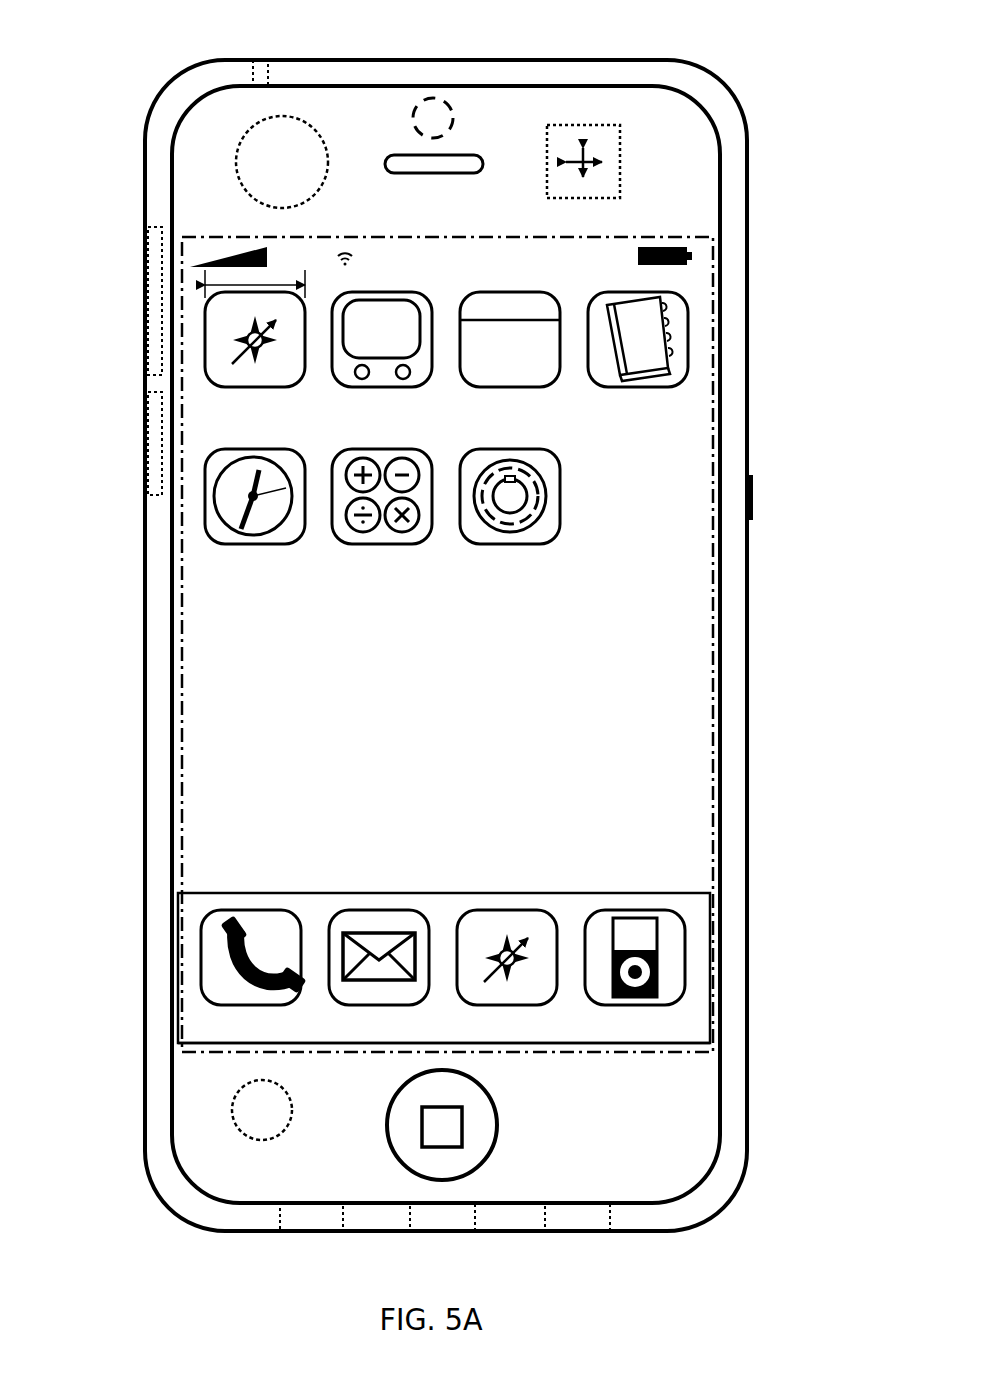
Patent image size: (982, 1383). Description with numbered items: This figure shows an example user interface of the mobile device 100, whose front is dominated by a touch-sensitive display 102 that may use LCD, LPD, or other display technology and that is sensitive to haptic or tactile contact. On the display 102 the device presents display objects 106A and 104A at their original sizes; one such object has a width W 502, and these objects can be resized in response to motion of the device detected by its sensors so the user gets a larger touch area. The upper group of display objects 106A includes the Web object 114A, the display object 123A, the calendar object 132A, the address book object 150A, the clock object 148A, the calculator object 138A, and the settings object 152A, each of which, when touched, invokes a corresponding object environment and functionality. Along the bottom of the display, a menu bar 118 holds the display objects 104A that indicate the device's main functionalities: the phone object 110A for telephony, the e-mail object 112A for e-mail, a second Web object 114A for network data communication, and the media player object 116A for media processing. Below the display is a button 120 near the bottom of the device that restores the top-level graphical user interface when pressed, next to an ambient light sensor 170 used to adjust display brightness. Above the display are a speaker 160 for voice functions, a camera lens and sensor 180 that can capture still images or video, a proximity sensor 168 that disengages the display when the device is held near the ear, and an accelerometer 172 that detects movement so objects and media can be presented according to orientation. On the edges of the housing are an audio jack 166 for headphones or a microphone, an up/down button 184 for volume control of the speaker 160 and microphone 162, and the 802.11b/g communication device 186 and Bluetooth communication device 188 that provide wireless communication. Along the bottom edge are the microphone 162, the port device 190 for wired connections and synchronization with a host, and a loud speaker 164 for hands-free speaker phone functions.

The mobile device 100 is at (532, 59).
The touch-sensitive display 102 is at (645, 237).
The display objects 104A is at (692, 911).
The display objects 106A is at (695, 287).
The phone object 110A is at (250, 910).
The e-mail object 112A is at (380, 910).
The Web object 114A is at (290, 388).
The media player object 116A is at (618, 910).
The menu bar 118 is at (591, 1046).
The button 120 is at (499, 1124).
The display object 123A is at (420, 388).
The calendar object 132A is at (550, 388).
The calculator object 138A is at (420, 544).
The clock object 148A is at (290, 544).
The address book object 150A is at (688, 387).
The settings object 152A is at (558, 544).
The speaker 160 is at (418, 174).
The microphone 162 is at (343, 1217).
The loud speaker 164 is at (610, 1217).
The audio jack 166 is at (268, 70).
The proximity sensor 168 is at (240, 164).
The ambient light sensor 170 is at (282, 1136).
The accelerometer 172 is at (622, 164).
The camera lens and sensor 180 is at (455, 116).
The up/down button 184 is at (753, 496).
The 802.11b/g communication device 186 is at (148, 227).
The Bluetooth communication device 188 is at (148, 392).
The port device 190 is at (475, 1217).
The width W 502 is at (203, 290).